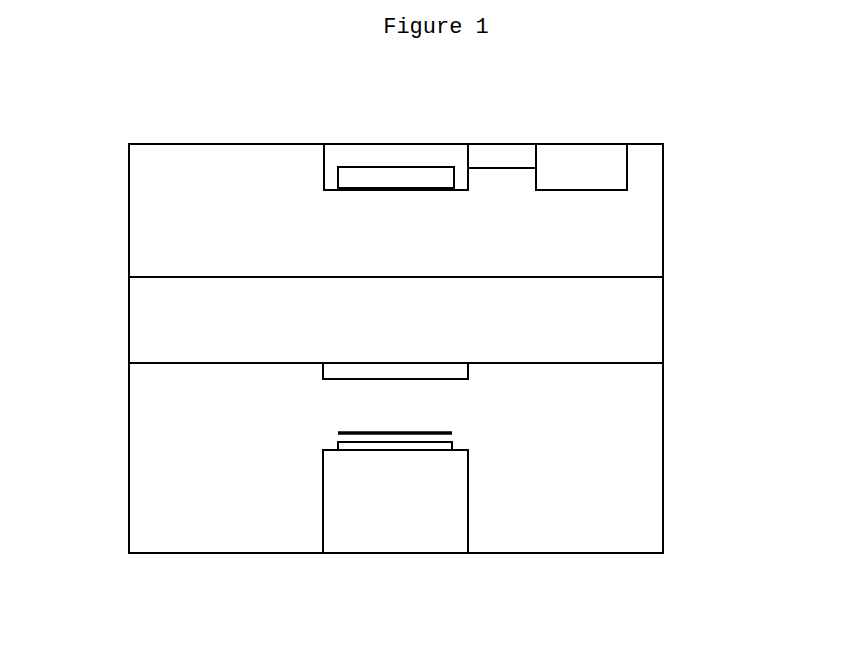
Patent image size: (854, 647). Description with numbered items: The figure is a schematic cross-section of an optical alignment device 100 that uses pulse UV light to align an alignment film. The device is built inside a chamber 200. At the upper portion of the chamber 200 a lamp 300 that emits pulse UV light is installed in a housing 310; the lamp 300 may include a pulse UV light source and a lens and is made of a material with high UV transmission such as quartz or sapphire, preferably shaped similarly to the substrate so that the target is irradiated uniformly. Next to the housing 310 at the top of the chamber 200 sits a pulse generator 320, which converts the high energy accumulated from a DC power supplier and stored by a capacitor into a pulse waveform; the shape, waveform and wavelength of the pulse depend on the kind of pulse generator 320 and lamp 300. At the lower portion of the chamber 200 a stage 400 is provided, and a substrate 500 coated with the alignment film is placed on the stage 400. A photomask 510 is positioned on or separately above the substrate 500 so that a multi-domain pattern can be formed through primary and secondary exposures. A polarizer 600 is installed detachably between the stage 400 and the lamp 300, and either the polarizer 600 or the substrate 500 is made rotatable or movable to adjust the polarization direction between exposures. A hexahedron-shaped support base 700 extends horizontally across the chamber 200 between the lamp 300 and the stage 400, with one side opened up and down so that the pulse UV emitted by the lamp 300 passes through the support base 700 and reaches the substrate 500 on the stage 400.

The optical alignment device 100 is at (678, 172).
The chamber 200 is at (663, 482).
The lamp 300 is at (395, 192).
The housing 310 is at (386, 156).
The pulse generator 320 is at (573, 157).
The stage 400 is at (428, 518).
The substrate 500 is at (350, 447).
The photomask 510 is at (453, 433).
The polarizer 600 is at (332, 372).
The support base 700 is at (620, 318).